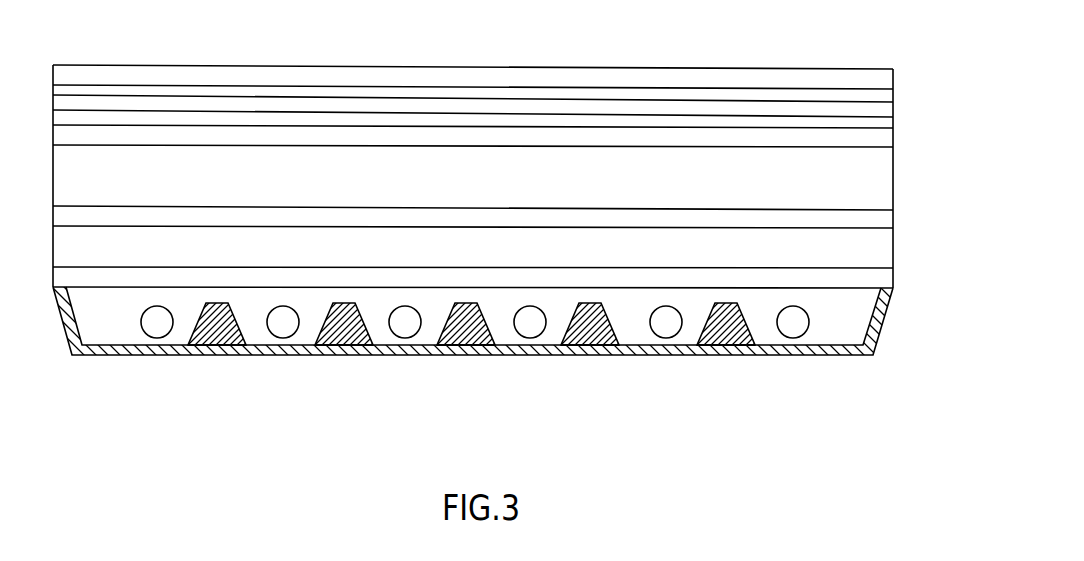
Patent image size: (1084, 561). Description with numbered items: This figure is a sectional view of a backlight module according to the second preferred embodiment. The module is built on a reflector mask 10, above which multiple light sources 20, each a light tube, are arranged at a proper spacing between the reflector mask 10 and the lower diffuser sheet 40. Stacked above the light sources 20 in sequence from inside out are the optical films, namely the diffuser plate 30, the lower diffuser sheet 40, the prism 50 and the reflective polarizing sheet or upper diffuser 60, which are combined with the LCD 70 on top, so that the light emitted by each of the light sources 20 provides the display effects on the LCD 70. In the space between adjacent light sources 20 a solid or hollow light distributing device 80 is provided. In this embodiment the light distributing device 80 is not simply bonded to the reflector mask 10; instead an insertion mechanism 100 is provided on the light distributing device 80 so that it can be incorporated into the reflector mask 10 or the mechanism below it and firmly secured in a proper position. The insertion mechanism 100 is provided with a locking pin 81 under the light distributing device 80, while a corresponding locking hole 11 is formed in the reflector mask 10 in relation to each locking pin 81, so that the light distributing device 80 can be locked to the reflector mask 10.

The reflector mask 10 is at (627, 353).
The locking hole 11 is at (217, 347).
The light sources 20 is at (153, 333).
The diffuser plate 30 is at (843, 283).
The lower diffuser sheet 40 is at (887, 220).
The prism 50 is at (883, 137).
The reflective polarizing sheet or upper diffuser 60 is at (722, 108).
The LCD 70 is at (575, 75).
The light distributing device 80 is at (200, 340).
The locking pin 81 is at (340, 340).
The insertion mechanism 100 is at (578, 347).